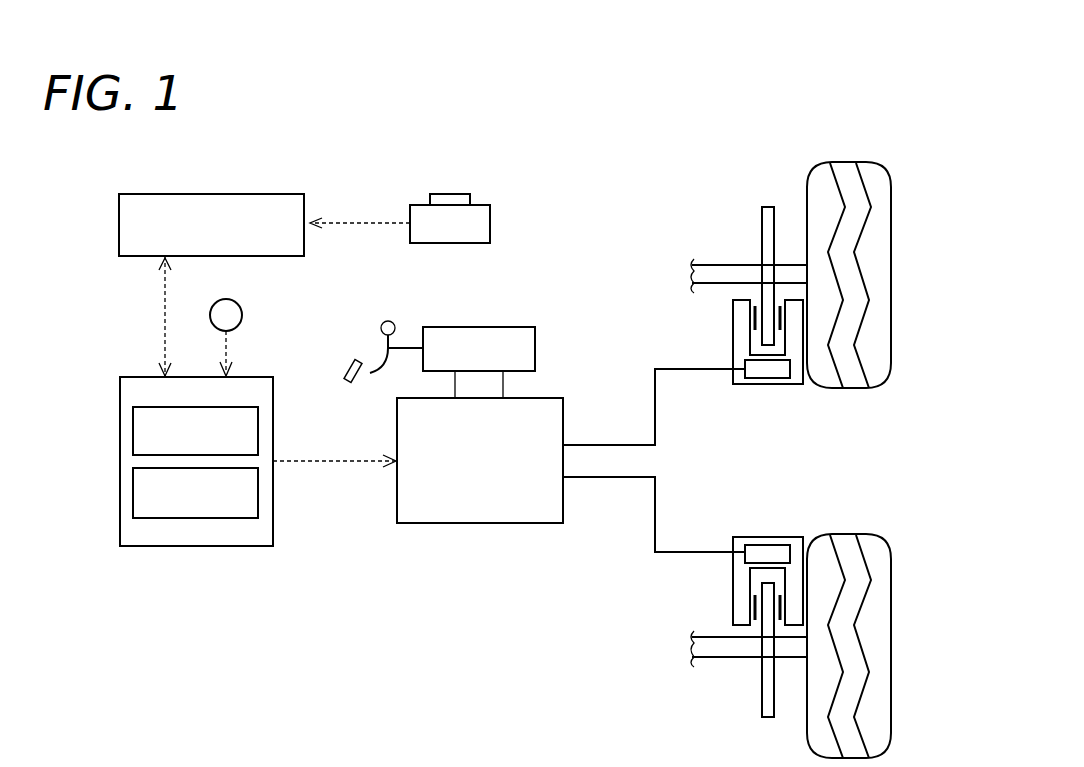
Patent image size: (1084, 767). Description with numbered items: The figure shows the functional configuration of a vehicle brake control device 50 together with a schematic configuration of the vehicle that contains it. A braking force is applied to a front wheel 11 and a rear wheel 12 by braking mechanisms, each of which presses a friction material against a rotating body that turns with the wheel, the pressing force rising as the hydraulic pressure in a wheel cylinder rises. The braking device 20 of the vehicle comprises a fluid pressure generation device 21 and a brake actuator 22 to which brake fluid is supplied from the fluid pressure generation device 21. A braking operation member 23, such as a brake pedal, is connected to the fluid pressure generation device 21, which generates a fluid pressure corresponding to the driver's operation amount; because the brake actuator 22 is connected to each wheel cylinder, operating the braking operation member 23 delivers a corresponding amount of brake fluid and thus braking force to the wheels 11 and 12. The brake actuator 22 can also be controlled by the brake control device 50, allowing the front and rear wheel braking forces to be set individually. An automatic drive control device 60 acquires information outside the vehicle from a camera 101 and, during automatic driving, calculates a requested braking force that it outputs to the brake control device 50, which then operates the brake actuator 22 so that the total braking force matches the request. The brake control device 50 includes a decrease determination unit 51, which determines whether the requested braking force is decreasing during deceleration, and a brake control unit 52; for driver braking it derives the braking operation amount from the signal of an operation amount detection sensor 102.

The front wheel 11 is at (891, 275).
The rear wheel 12 is at (891, 647).
The braking device 20 is at (378, 568).
The fluid pressure generation device 21 is at (480, 327).
The brake actuator 22 is at (480, 523).
The braking operation member 23 is at (345, 371).
The brake control device 50 is at (231, 489).
The decrease determination unit 51 is at (133, 431).
The brake control unit 52 is at (133, 493).
The automatic drive control device 60 is at (244, 194).
The camera 101 is at (490, 223).
The operation amount detection sensor 102 is at (242, 312).